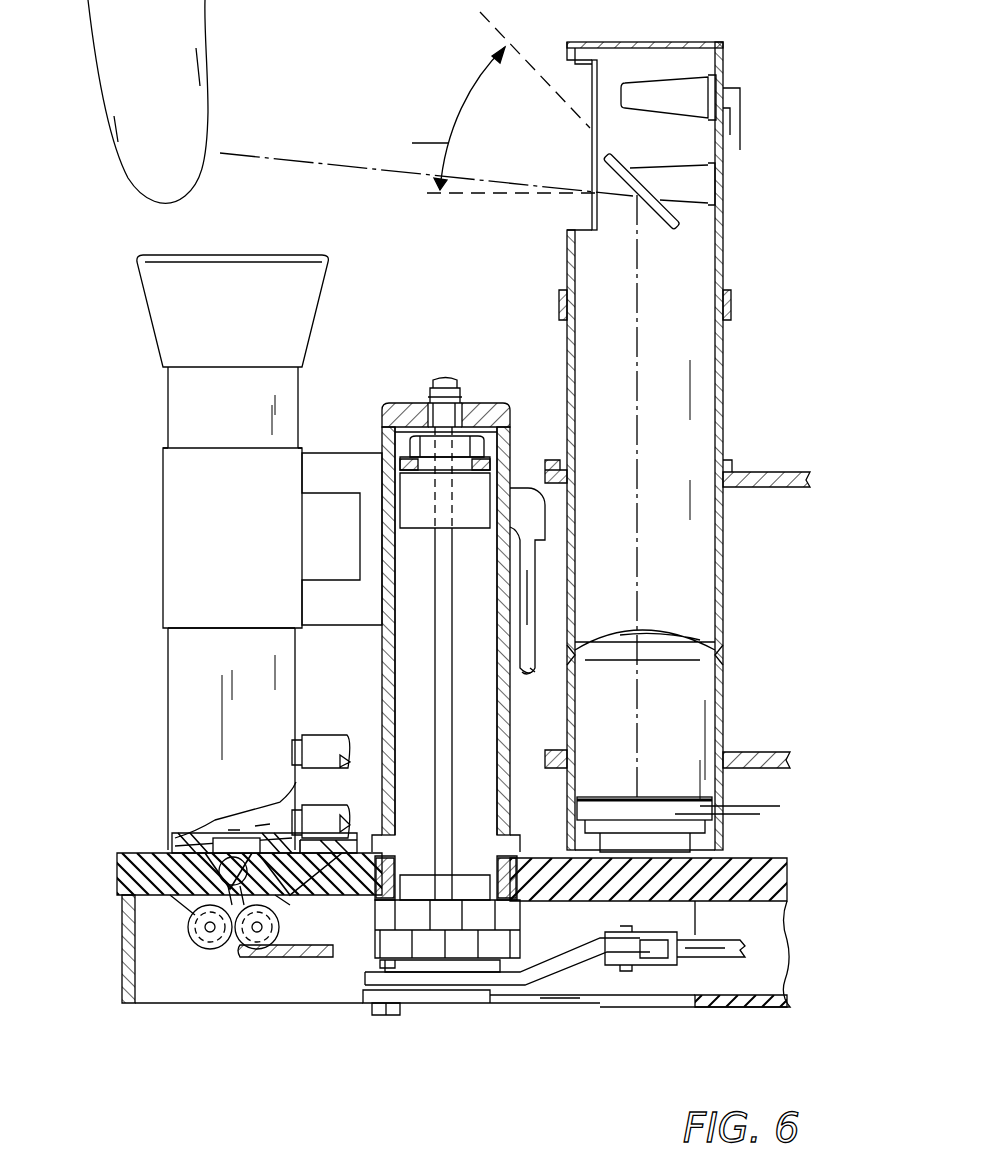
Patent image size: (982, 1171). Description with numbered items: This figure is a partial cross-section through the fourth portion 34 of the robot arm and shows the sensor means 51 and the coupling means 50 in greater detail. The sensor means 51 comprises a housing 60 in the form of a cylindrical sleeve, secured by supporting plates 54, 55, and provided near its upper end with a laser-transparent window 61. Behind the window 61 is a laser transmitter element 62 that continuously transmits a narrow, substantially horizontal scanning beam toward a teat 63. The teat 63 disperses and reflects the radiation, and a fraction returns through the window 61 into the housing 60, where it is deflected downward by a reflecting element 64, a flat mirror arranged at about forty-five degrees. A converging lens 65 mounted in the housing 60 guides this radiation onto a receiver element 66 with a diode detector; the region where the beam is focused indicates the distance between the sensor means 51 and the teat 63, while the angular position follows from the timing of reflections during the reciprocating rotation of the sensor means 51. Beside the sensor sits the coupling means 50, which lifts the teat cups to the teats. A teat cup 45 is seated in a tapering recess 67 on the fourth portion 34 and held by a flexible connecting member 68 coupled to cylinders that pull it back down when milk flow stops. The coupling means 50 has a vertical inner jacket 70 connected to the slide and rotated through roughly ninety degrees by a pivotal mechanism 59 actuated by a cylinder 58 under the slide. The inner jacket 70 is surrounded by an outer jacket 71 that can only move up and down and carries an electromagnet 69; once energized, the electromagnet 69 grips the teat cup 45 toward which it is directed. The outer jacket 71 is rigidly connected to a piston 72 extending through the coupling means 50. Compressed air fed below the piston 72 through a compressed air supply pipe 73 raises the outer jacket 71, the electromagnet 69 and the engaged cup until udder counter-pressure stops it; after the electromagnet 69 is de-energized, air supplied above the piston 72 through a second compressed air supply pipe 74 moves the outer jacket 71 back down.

The fourth portion of robot arm 34 is at (745, 1010).
The teat cup 45 is at (163, 420).
The coupling means 50 is at (499, 384).
The sensor means 51 is at (740, 389).
The supporting plate 54 is at (775, 752).
The supporting plate 55 is at (752, 490).
The cylinder 58 is at (700, 965).
The pivotal mechanism 59 is at (520, 998).
The housing 60 is at (723, 250).
The laser-transparent window 61 is at (590, 208).
The laser transmitter element 62 is at (648, 108).
The teat 63 is at (208, 112).
The reflecting element 64 is at (665, 232).
The converging lens 65 is at (660, 628).
The receiver element 66 is at (662, 795).
The tapering recess 67 is at (165, 856).
The flexible connecting member 68 is at (290, 960).
The electromagnet 69 is at (348, 456).
The inner jacket 70 is at (497, 726).
The outer jacket 71 is at (382, 702).
The piston 72 is at (418, 868).
The compressed air supply pipe 73 is at (580, 1010).
The compressed air supply pipe 74 is at (534, 650).